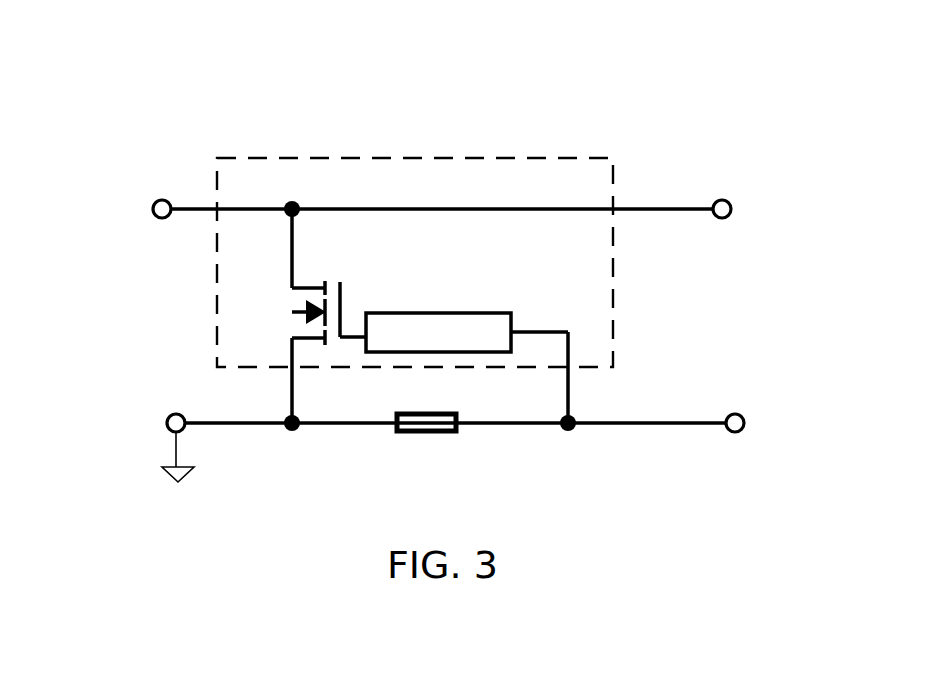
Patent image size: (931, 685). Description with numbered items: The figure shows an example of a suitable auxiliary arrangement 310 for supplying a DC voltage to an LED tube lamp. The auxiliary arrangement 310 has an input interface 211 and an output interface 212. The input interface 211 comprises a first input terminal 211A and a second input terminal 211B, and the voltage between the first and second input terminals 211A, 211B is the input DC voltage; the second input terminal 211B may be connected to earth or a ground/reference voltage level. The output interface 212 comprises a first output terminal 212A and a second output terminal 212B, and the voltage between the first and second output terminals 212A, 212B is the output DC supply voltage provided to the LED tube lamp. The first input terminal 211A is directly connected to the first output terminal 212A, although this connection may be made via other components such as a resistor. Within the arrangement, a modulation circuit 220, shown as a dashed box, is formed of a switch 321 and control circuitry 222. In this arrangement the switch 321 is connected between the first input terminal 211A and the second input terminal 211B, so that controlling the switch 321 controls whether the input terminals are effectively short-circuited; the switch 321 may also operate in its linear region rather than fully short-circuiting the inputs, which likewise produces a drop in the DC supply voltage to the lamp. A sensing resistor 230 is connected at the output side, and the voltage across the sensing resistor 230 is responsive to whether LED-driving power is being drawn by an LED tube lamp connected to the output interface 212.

The auxiliary arrangement 310 is at (215, 88).
The modulation circuit 220 is at (505, 150).
The switch 321 is at (329, 316).
The control circuitry 222 is at (467, 368).
The sensing resistor 230 is at (426, 407).
The input interface 211 is at (175, 172).
The first input terminal 211A is at (129, 221).
The second input terminal 211B is at (157, 430).
The output interface 212 is at (756, 160).
The first output terminal 212A is at (749, 226).
The second output terminal 212B is at (754, 408).